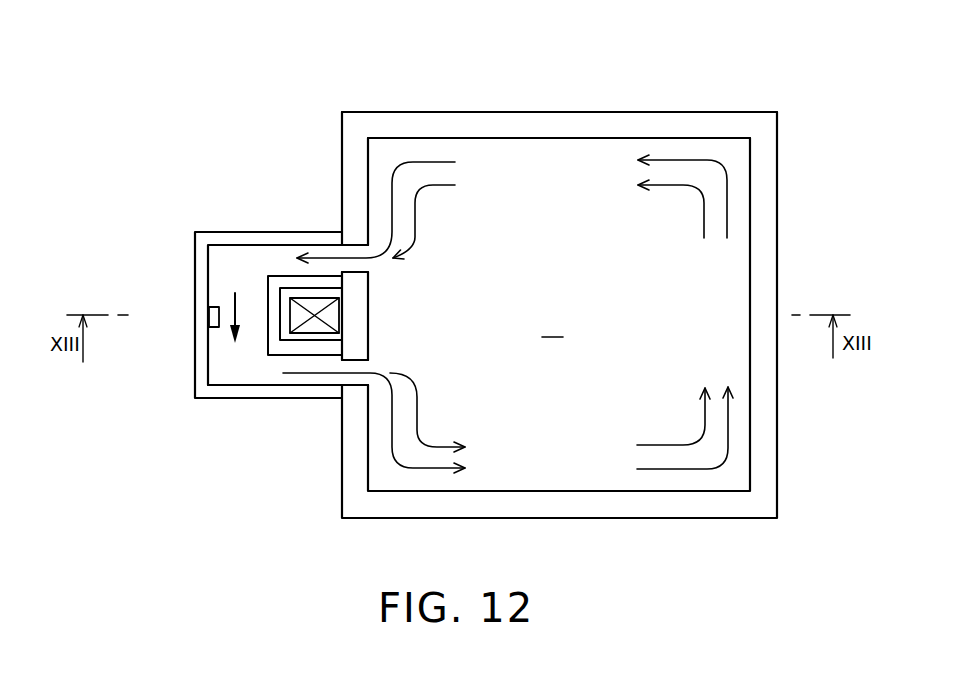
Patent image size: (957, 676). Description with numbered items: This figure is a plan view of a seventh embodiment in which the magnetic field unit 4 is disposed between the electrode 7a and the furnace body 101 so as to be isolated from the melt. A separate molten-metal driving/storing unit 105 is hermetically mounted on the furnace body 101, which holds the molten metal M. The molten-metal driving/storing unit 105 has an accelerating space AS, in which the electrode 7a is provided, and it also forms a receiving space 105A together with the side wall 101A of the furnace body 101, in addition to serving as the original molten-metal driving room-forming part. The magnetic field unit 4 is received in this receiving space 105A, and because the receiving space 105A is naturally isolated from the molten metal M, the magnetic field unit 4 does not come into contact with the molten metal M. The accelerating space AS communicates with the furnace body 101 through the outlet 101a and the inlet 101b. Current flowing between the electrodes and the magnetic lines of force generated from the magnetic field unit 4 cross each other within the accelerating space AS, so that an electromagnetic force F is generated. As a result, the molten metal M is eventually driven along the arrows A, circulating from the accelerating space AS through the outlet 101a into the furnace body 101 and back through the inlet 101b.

The furnace body 101 is at (567, 112).
The side wall of the furnace body 101A is at (360, 117).
The outlet 101a is at (353, 245).
The inlet 101b is at (350, 388).
The molten-metal driving/storing unit 105 is at (197, 364).
The receiving space 105A is at (280, 293).
The magnetic field unit 4 is at (338, 315).
The electrode 7a is at (197, 315).
The electromagnetic force F is at (233, 293).
The accelerating space AS is at (210, 386).
The arrows A is at (393, 201).
The molten metal M is at (552, 322).